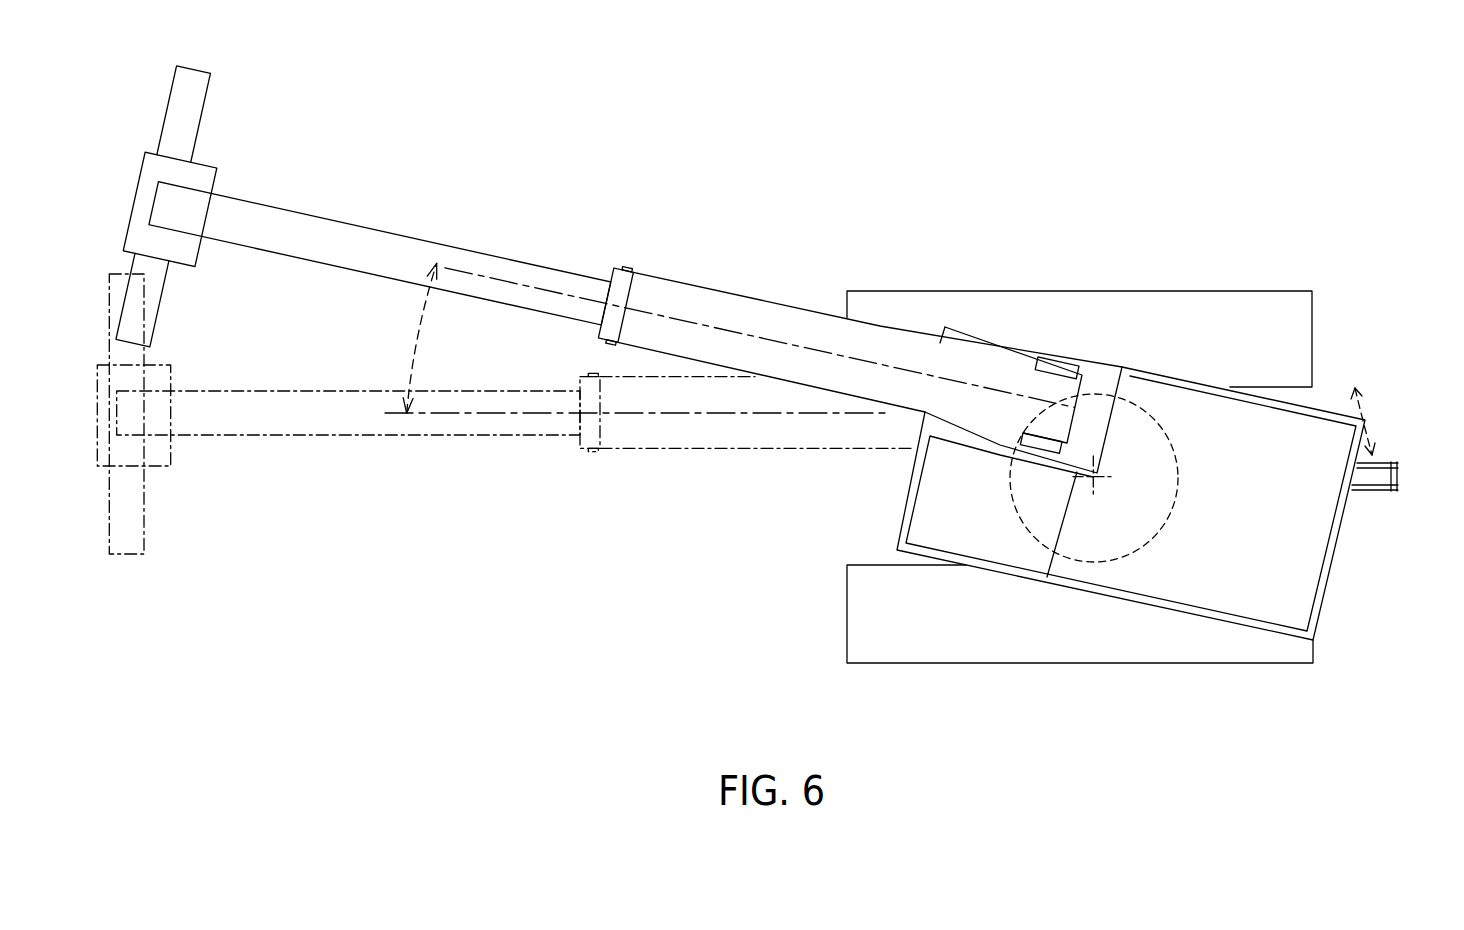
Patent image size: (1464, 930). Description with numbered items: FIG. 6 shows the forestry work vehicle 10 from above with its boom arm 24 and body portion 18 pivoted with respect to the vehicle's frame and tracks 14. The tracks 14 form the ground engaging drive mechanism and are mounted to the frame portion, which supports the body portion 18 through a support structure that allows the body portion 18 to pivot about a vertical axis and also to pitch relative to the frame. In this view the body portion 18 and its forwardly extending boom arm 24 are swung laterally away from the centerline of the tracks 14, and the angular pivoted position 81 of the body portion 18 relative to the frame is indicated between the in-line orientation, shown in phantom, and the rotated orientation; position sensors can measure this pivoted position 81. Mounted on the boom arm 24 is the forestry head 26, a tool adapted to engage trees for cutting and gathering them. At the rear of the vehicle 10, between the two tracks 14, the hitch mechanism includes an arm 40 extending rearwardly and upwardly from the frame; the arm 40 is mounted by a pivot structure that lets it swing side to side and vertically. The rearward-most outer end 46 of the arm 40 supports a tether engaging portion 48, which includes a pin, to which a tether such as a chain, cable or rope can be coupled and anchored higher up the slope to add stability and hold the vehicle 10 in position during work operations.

The work vehicle 10 is at (1025, 98).
The tracks 14 is at (1300, 290).
The body portion 18 is at (1180, 617).
The boom arm 24 is at (303, 232).
The forestry head 26 is at (148, 178).
The arm 40 is at (1368, 491).
The outer end 46 is at (1390, 491).
The tether engaging portion 48 is at (1385, 462).
The pivoted position 81 is at (417, 333).